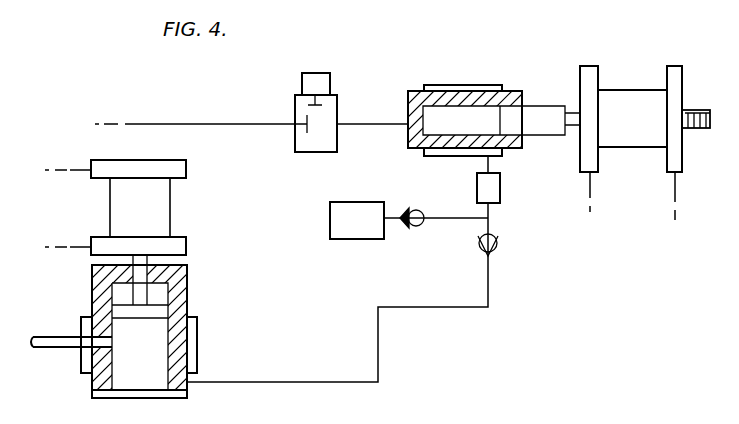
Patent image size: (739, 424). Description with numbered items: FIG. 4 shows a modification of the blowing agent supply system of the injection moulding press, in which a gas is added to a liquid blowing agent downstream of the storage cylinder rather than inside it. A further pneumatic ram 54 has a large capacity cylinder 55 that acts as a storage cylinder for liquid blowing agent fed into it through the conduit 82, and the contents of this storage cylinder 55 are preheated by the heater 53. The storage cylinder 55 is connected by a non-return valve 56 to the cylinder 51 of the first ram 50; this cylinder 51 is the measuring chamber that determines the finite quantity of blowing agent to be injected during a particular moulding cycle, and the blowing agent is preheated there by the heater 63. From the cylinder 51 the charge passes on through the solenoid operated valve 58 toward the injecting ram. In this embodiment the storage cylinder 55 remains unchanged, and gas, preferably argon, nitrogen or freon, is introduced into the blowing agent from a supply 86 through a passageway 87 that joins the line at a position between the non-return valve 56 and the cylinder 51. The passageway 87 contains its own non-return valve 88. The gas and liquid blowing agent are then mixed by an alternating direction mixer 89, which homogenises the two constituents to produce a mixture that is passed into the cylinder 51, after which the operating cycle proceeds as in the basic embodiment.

The first ram 50 is at (622, 98).
The cylinder 51 is at (417, 139).
The heater 53 is at (87, 322).
The pneumatic ram 54 is at (163, 200).
The storage cylinder 55 is at (178, 283).
The non-return valve 56 is at (498, 250).
The solenoid operated valve 58 is at (295, 100).
The heater 63 is at (455, 85).
The conduit 82 is at (48, 350).
The supply 86 is at (348, 228).
The passageway 87 is at (452, 213).
The non-return valve 88 is at (410, 230).
The alternating direction mixer 89 is at (500, 188).